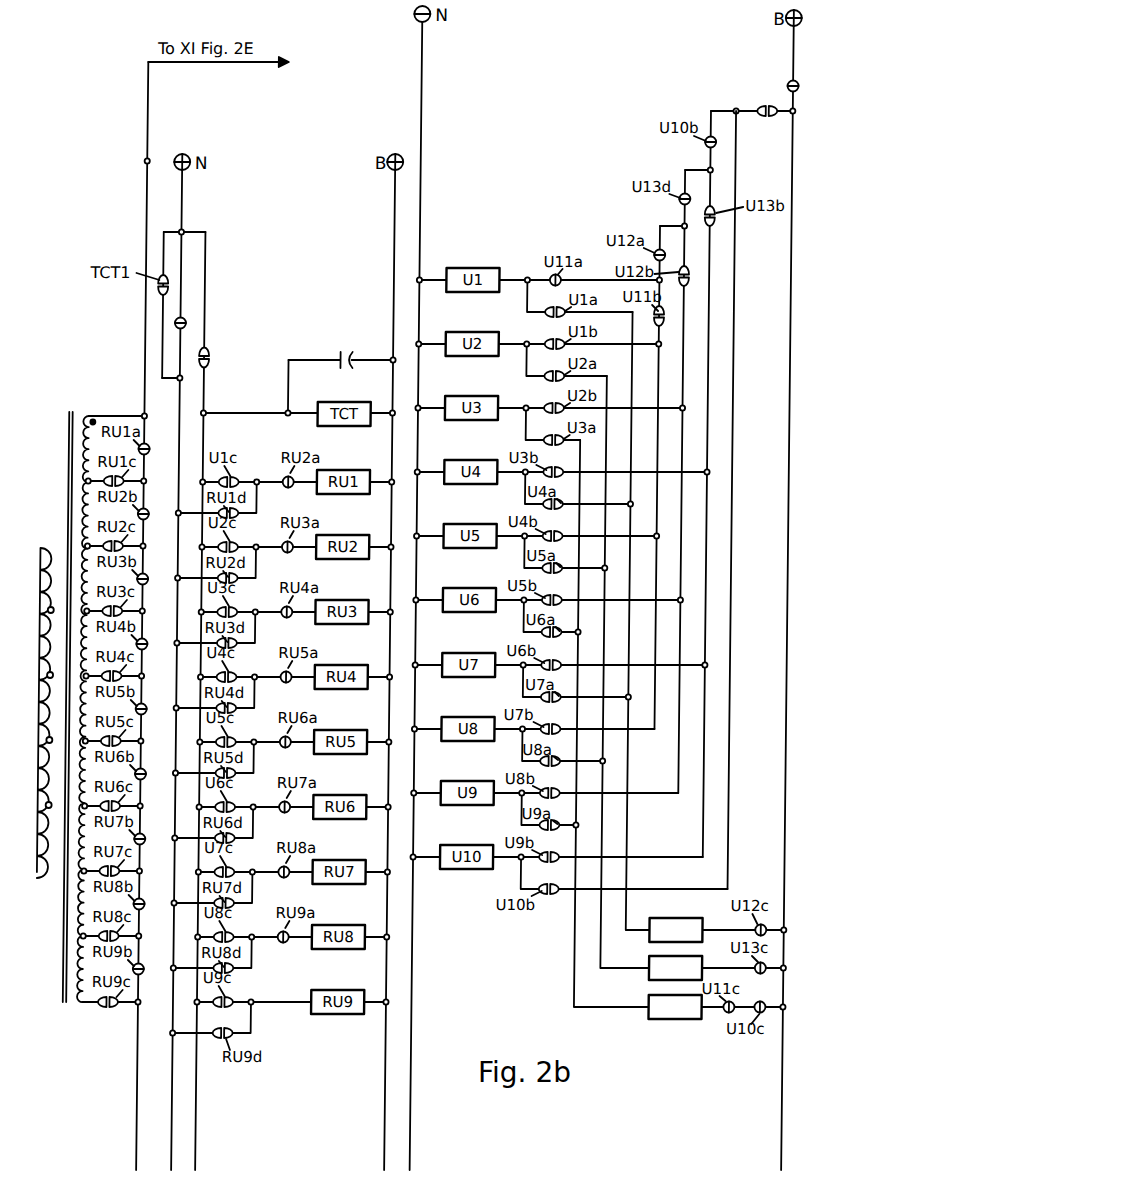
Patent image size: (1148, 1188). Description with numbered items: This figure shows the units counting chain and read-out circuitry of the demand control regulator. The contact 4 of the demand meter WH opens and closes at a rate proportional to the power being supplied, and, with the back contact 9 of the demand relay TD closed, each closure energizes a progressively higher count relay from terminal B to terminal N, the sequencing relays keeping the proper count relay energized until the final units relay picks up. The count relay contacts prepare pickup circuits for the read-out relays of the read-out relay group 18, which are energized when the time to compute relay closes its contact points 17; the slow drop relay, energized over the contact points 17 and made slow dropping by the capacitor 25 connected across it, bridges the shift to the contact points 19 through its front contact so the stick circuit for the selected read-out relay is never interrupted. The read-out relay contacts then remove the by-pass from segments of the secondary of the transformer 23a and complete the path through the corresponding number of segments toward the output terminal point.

The contact of the demand meter WH 4 is at (762, 107).
The back contact of the TD relay 9 is at (783, 83).
The contact points of the TC relay 17 is at (206, 353).
The read-out relay group 18 is at (279, 201).
The contact points of the TC relay 19 is at (181, 320).
The transformer 23a is at (80, 412).
The capacitor 25 is at (350, 351).